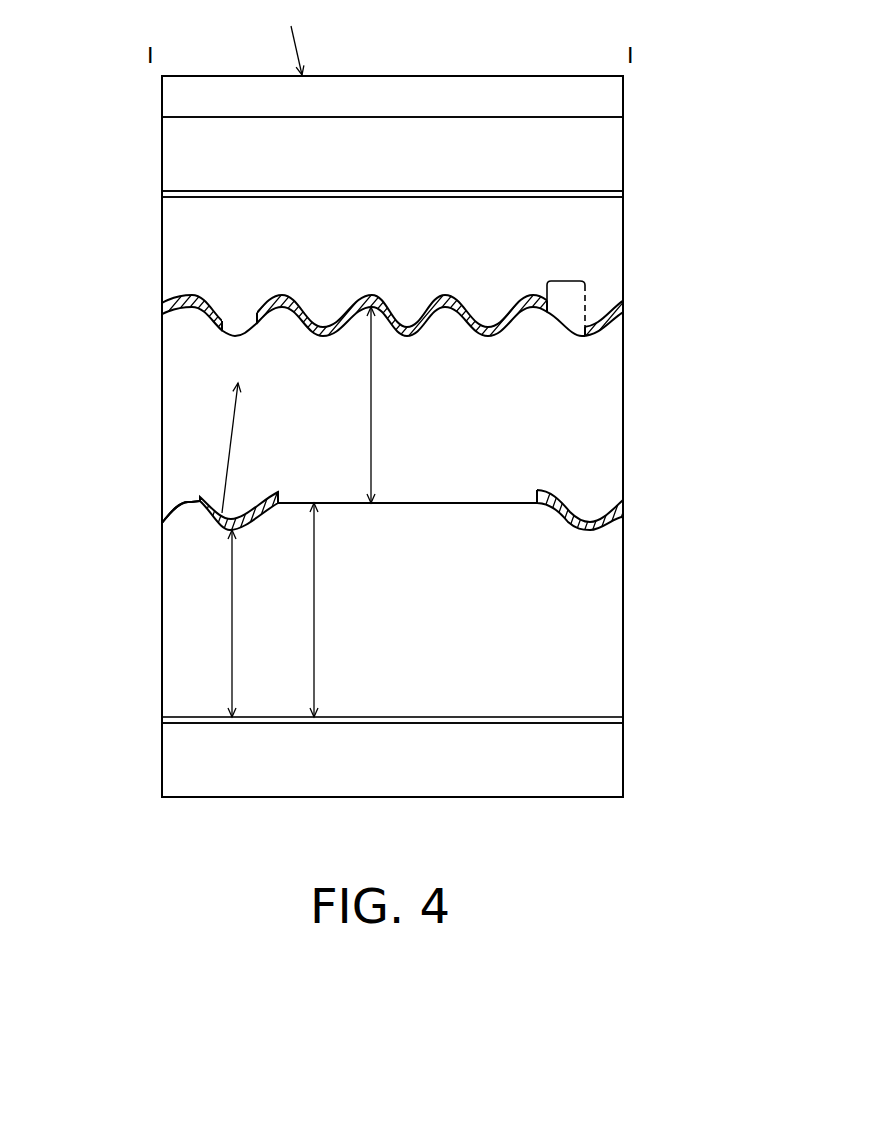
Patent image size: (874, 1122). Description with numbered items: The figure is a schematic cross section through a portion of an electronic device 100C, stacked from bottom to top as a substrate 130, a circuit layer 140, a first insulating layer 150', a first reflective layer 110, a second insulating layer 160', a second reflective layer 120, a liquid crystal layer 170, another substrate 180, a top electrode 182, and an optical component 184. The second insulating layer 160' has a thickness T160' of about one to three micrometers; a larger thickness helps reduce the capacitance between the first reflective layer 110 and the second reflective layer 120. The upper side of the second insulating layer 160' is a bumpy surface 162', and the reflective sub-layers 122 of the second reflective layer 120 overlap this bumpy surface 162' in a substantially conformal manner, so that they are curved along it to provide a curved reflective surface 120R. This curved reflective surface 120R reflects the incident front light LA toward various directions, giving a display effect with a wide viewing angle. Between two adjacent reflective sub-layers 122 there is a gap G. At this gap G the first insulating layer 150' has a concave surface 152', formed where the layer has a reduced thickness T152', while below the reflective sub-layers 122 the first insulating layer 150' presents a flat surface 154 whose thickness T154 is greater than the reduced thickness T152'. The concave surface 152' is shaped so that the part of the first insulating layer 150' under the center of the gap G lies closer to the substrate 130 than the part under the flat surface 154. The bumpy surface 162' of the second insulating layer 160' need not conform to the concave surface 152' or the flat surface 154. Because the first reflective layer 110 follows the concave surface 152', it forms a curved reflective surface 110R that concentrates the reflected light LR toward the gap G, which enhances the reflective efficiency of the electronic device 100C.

The electronic device 100C is at (865, 872).
The optical component 184 is at (612, 95).
The substrate 180 is at (612, 155).
The top electrode 182 is at (612, 193).
The liquid crystal layer 170 is at (612, 227).
The reflective sub-layers 122 is at (372, 321).
The second reflective layer 120 is at (480, 312).
The gap G is at (563, 281).
The curved reflective surface 120R is at (282, 294).
The bumpy surface 162' is at (334, 352).
The second insulating layer 160' is at (426, 417).
The thickness of the second insulating layer T160' is at (403, 405).
The reflected light LR is at (230, 427).
The first reflective layer 110 is at (426, 552).
The curved reflective surface 110R is at (205, 500).
The concave surface 152' is at (443, 535).
The flat surface 154 is at (479, 505).
The reduced thickness T152' is at (201, 623).
The thickness of the first insulating layer corresponding to the flat surface T154 is at (342, 610).
The first insulating layer 150' is at (426, 617).
The circuit layer 140 is at (612, 720).
The substrate 130 is at (612, 765).
The incident front light LA is at (293, 33).